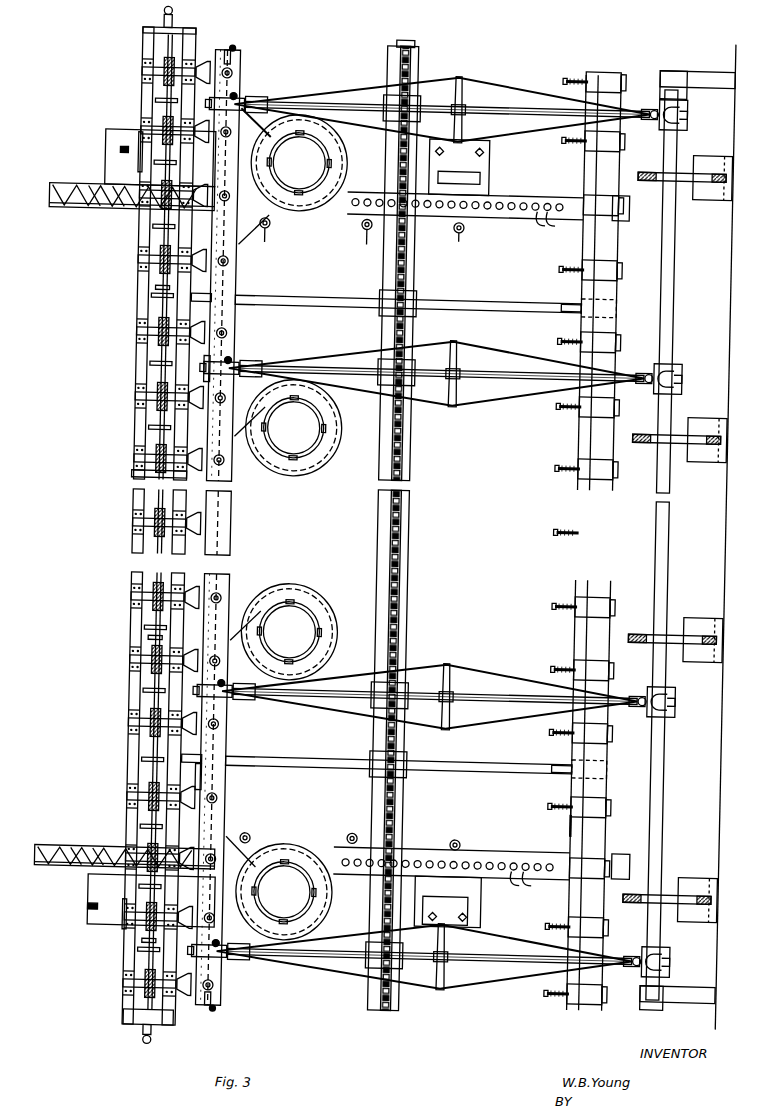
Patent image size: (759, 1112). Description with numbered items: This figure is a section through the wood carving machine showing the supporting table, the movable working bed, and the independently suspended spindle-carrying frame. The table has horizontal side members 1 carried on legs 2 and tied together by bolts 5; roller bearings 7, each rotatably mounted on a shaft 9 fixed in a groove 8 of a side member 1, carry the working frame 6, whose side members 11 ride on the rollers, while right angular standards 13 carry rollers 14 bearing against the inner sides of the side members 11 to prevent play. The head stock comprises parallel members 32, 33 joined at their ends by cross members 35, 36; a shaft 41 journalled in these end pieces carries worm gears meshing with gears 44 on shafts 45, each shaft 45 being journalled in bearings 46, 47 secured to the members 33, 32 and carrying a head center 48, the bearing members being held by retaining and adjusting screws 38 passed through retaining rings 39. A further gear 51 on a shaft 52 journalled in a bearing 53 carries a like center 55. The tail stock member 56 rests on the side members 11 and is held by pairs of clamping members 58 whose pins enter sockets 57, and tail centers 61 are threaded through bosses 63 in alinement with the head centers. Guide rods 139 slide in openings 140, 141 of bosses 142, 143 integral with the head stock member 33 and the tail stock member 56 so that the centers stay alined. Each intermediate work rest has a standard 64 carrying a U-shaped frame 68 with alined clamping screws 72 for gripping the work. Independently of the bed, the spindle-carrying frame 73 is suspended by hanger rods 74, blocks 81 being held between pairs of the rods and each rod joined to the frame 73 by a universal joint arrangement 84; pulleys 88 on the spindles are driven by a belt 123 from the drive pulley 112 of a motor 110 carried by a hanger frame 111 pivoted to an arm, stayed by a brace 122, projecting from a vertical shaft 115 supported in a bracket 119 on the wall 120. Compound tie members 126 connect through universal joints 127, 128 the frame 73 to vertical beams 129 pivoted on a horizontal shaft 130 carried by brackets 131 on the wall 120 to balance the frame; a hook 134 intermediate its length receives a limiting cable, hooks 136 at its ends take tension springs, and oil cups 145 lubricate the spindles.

The side members 1 is at (42, 198).
The legs 2 is at (97, 176).
The bolts 5 is at (112, 156).
The working frame 6 is at (530, 193).
The roller bearings 7 is at (88, 214).
The grooves 8 is at (64, 214).
The shaft 9 is at (104, 526).
The side member 11 is at (510, 208).
The supporting rods or standards 13 is at (127, 244).
The roller 14 is at (452, 228).
The head stock member 32 is at (132, 362).
The head stock member 33 is at (199, 572).
The cross member 35 is at (153, 28).
The cross member 36 is at (150, 1040).
The retaining and adjusting screws 38 is at (150, 293).
The retaining rings 39 is at (146, 106).
The shaft 41 is at (132, 51).
The gear 44 is at (154, 130).
The shaft 45 is at (132, 77).
The bearing 46 is at (199, 190).
The bearing 47 is at (130, 152).
The center 48 is at (197, 130).
The gear 51 is at (150, 512).
The shaft 52 is at (132, 532).
The bearing 53 is at (165, 556).
The center 55 is at (195, 516).
The tail stock member 56 is at (576, 821).
The sockets 57 is at (535, 554).
The clamping members 58 is at (578, 218).
The tail centers 61 is at (556, 337).
The boss 63 is at (584, 1006).
The standard 64 is at (364, 804).
The U-shaped frame 68 is at (384, 70).
The clamping screws 72 is at (417, 826).
The spindle-carrying frame 73 is at (232, 88).
The hanger rods 74 is at (236, 102).
The blocks 81 is at (256, 122).
The universal joint arrangement 84 is at (245, 522).
The pulley 88 is at (224, 72).
The motor 110 is at (305, 195).
The hanger frame 111 is at (306, 462).
The drive pulley 112 is at (330, 140).
The vertical shaft 115 is at (702, 531).
The bracket 119 is at (700, 148).
The wall 120 is at (725, 830).
The brace 122 is at (640, 166).
The belt 123 is at (232, 241).
The compound tie member 126 is at (470, 108).
The universal joint arrangement 127 is at (258, 105).
The universal joint 128 is at (638, 526).
The vertical beam 129 is at (678, 104).
The horizontal shaft 130 is at (668, 275).
The brackets 131 is at (703, 59).
The hook 134 is at (230, 539).
The hooks 136 is at (224, 48).
The guide rods 139 is at (404, 528).
The opening 140 is at (197, 558).
The opening 141 is at (611, 300).
The boss 142 is at (206, 763).
The boss 143 is at (570, 531).
The oil cup 145 is at (216, 56).